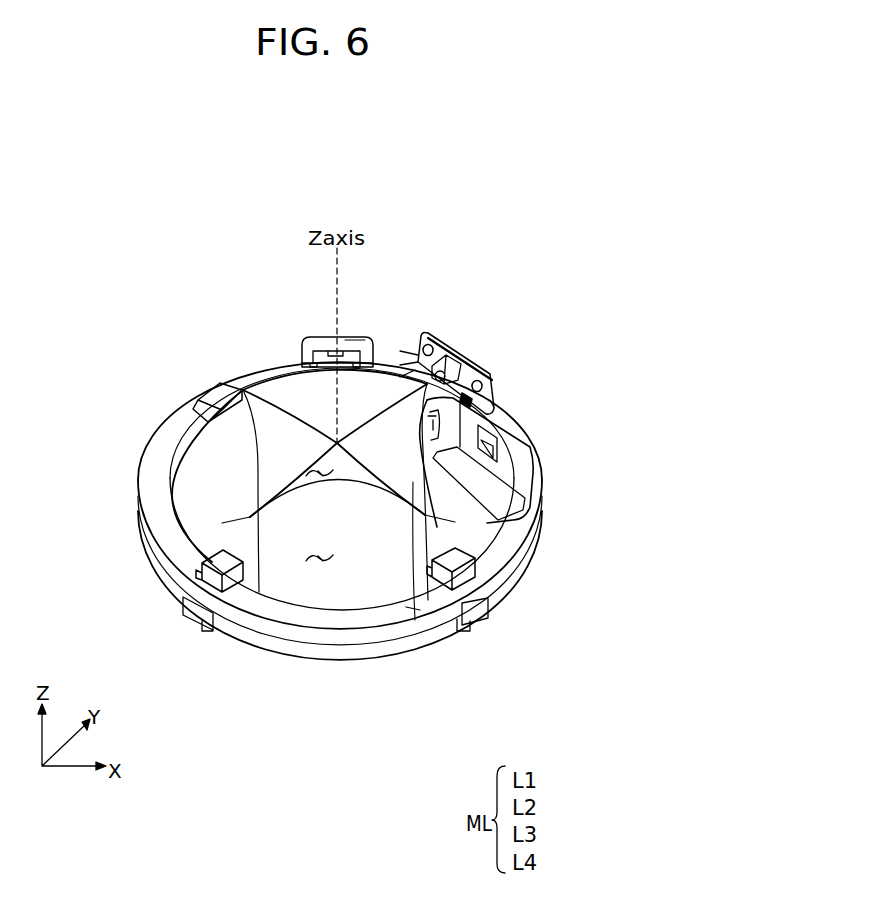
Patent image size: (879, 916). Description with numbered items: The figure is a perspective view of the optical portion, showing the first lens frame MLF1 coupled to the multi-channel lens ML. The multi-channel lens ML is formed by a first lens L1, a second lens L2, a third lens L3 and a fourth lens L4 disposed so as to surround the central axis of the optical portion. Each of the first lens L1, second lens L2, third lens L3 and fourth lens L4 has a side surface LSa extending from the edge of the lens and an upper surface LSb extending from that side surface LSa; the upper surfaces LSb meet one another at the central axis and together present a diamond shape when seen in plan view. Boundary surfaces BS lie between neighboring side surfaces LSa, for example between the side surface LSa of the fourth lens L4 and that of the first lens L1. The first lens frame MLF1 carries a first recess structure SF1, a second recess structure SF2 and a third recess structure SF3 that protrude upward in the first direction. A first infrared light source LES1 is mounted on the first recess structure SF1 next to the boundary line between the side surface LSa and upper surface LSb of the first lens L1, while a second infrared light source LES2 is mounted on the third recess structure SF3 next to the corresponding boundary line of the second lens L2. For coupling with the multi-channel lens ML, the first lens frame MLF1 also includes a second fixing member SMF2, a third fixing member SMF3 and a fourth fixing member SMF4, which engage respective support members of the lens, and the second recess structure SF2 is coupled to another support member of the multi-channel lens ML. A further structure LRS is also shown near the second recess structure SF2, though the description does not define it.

The boundary surface BS is at (458, 566).
The multi-channel lens ML is at (505, 588).
The first lens L1 is at (480, 525).
The second lens L2 is at (277, 382).
The third lens L3 is at (203, 470).
The fourth lens L4 is at (353, 590).
The side surface LSa is at (315, 561).
The upper surface LSb is at (313, 474).
The first infrared light source LES1 is at (443, 421).
The second infrared light source LES2 is at (327, 347).
The first recess structure SF1 is at (525, 470).
The second recess structure SF2 is at (497, 395).
The third recess structure SF3 is at (363, 344).
The lens retaining structure LRS is at (450, 348).
The second fixing member SMF2 is at (213, 395).
The third fixing member SMF3 is at (203, 575).
The fourth fixing member SMF4 is at (464, 620).
The first lens frame MLF1 is at (413, 613).